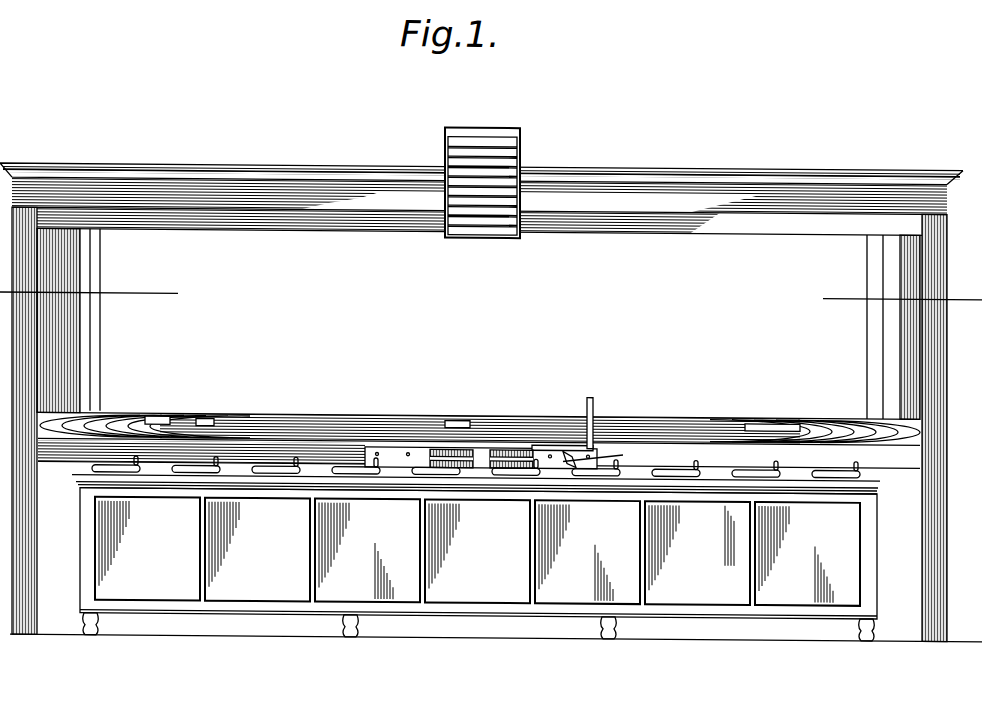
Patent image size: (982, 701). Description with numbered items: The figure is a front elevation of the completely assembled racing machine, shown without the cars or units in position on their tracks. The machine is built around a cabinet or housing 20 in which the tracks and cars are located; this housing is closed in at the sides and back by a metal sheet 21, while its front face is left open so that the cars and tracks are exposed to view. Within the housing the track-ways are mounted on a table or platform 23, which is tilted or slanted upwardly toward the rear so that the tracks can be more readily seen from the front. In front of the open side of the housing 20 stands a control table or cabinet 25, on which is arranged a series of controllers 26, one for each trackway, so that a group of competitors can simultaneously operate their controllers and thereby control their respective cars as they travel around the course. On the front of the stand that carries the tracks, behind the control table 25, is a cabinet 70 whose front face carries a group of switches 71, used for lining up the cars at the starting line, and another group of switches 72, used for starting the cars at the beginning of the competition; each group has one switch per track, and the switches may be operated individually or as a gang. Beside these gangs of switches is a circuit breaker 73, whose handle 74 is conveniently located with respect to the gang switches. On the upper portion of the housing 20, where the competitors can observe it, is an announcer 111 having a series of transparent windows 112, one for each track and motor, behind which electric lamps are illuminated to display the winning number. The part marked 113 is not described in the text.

The cabinet or housing 20 is at (627, 252).
The metal sheet 21 is at (491, 292).
The table or platform 23 is at (843, 411).
The control table or cabinet 25 is at (500, 568).
The controllers 26 is at (192, 468).
The cabinet 70 is at (388, 455).
The switches 71 is at (430, 447).
The switches 72 is at (487, 444).
The circuit breaker 73 is at (563, 455).
The handle 74 is at (613, 453).
The announcer 111 is at (522, 149).
The windows 112 is at (500, 138).
The pointer post 113 is at (597, 392).